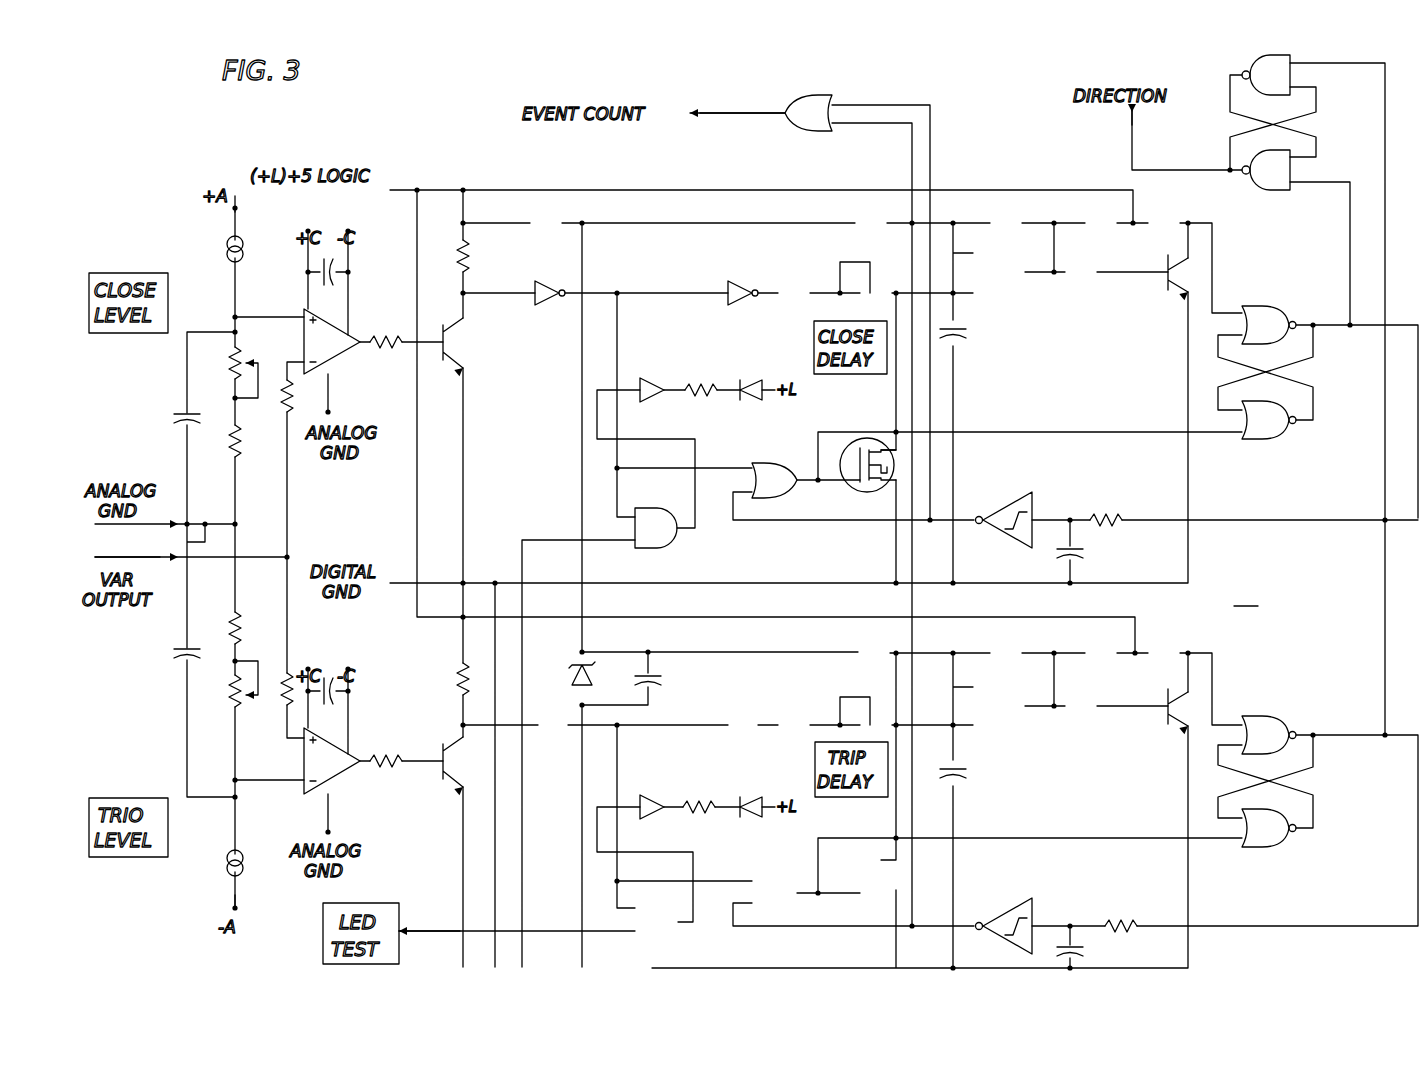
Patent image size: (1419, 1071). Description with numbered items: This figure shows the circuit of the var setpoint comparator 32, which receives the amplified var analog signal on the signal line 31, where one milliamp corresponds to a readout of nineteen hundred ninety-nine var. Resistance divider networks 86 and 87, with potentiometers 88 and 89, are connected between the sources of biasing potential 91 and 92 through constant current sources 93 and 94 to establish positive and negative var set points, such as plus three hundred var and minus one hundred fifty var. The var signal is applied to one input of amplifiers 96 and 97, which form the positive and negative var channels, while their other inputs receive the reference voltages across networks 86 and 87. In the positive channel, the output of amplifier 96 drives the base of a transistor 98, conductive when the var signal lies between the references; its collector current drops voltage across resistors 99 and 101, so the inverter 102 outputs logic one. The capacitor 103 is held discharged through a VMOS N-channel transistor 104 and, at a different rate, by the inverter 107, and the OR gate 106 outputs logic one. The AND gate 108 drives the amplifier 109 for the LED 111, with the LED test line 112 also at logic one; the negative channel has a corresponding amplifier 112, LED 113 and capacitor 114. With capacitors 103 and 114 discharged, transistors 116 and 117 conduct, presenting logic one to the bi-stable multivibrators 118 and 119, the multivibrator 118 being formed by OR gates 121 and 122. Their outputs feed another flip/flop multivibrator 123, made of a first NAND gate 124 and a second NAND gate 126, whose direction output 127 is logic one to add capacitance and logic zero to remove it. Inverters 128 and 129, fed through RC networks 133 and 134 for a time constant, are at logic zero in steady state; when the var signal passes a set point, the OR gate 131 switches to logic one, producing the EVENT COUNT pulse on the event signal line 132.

The signal line 31 is at (161, 556).
The var setpoint comparator 32 is at (1246, 594).
The resistance divider network 86 is at (243, 455).
The resistance divider network 87 is at (243, 620).
The potentiometer 88 is at (241, 365).
The potentiometer 89 is at (247, 708).
The source of biasing potential 91 is at (245, 224).
The source of biasing potential 92 is at (240, 900).
The constant current source 93 is at (222, 246).
The constant current source 94 is at (222, 866).
The amplifier 96 is at (344, 358).
The amplifier 97 is at (348, 788).
The transistor 98 is at (458, 345).
The resistor 99 is at (470, 253).
The resistor 101 is at (456, 673).
The inverter 102 is at (555, 302).
The capacitor 103 is at (960, 340).
The VMOS N-channel transistor 104 is at (862, 442).
The OR gate 106 is at (786, 494).
The inverter 107 is at (741, 290).
The AND gate 108 is at (660, 550).
The amplifier 109 is at (657, 380).
The LED 111 is at (750, 378).
The LED test line 112 is at (433, 930).
The LED 113 is at (750, 799).
The capacitor 114 is at (962, 778).
The transistor 116 is at (1163, 292).
The transistor 117 is at (1166, 722).
The bi-stable multivibrator 118 is at (1293, 379).
The bi-stable multivibrator 119 is at (1290, 716).
The OR gate 121 is at (1265, 306).
The OR gate 122 is at (1262, 440).
The flip/flop multivibrator 123 is at (1294, 131).
The first NAND gate 124 is at (1252, 58).
The second NAND gate 126 is at (1277, 192).
The direction output 127 is at (1130, 150).
The inverter 128 is at (1016, 496).
The inverter 129 is at (1016, 900).
The OR gate 131 is at (816, 94).
The event signal line 132 is at (740, 108).
The RC network 133 is at (1104, 514).
The RC network 134 is at (1118, 918).